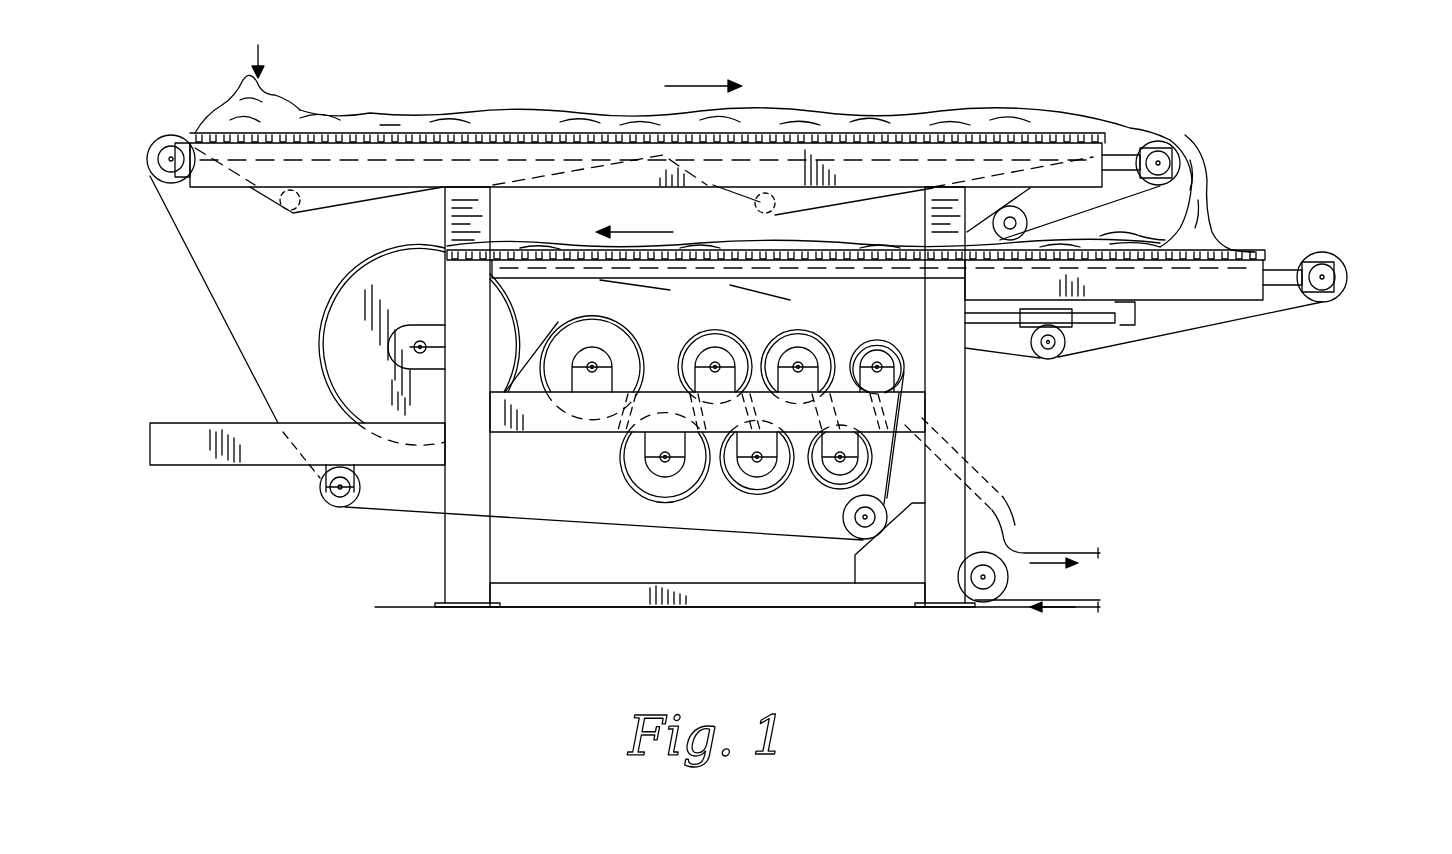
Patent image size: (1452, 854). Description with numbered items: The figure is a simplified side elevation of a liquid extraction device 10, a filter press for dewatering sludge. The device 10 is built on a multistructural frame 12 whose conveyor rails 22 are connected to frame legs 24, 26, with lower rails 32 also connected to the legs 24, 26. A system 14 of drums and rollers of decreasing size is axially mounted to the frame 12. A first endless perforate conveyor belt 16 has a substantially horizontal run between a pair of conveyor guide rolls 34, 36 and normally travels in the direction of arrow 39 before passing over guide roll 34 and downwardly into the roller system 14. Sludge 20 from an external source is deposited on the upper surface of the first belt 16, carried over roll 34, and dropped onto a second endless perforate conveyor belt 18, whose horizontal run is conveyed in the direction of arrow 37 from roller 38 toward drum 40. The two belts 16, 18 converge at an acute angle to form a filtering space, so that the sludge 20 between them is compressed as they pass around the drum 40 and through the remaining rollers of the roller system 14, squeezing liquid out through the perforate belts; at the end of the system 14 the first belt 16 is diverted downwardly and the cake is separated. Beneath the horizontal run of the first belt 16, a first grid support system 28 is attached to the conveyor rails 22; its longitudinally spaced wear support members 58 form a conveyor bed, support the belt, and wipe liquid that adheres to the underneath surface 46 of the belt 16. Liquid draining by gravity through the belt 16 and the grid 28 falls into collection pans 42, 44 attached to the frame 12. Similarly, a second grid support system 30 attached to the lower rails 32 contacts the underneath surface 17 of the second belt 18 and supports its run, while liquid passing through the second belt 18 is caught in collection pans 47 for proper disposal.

The liquid extraction device 10 is at (1127, 436).
The multistructural frame 12 is at (968, 403).
The system of drums and rollers 14 is at (661, 323).
The first endless perforate conveyor belt 16 is at (200, 137).
The underneath surface 17 is at (1295, 252).
The second endless perforate conveyor belt 18 is at (1285, 254).
The sludge 20 is at (515, 110).
The conveyor rails 22 is at (948, 165).
The frame leg 24 is at (957, 438).
The frame leg 26 is at (458, 548).
The first grid support system 28 is at (815, 140).
The second grid support system 30 is at (1232, 250).
The lower rails 32 is at (1205, 285).
The conveyor guide roll 34 is at (1180, 158).
The conveyor guide roll 36 is at (160, 145).
The arrow 37 is at (650, 232).
The roller 38 is at (1337, 260).
The arrow 39 is at (703, 63).
The drum 40 is at (362, 313).
The collection pan 42 is at (293, 214).
The collection pan 44 is at (775, 215).
The underneath surface 46 is at (1180, 137).
The collection pans 47 is at (760, 288).
The wear support members 58 is at (380, 135).